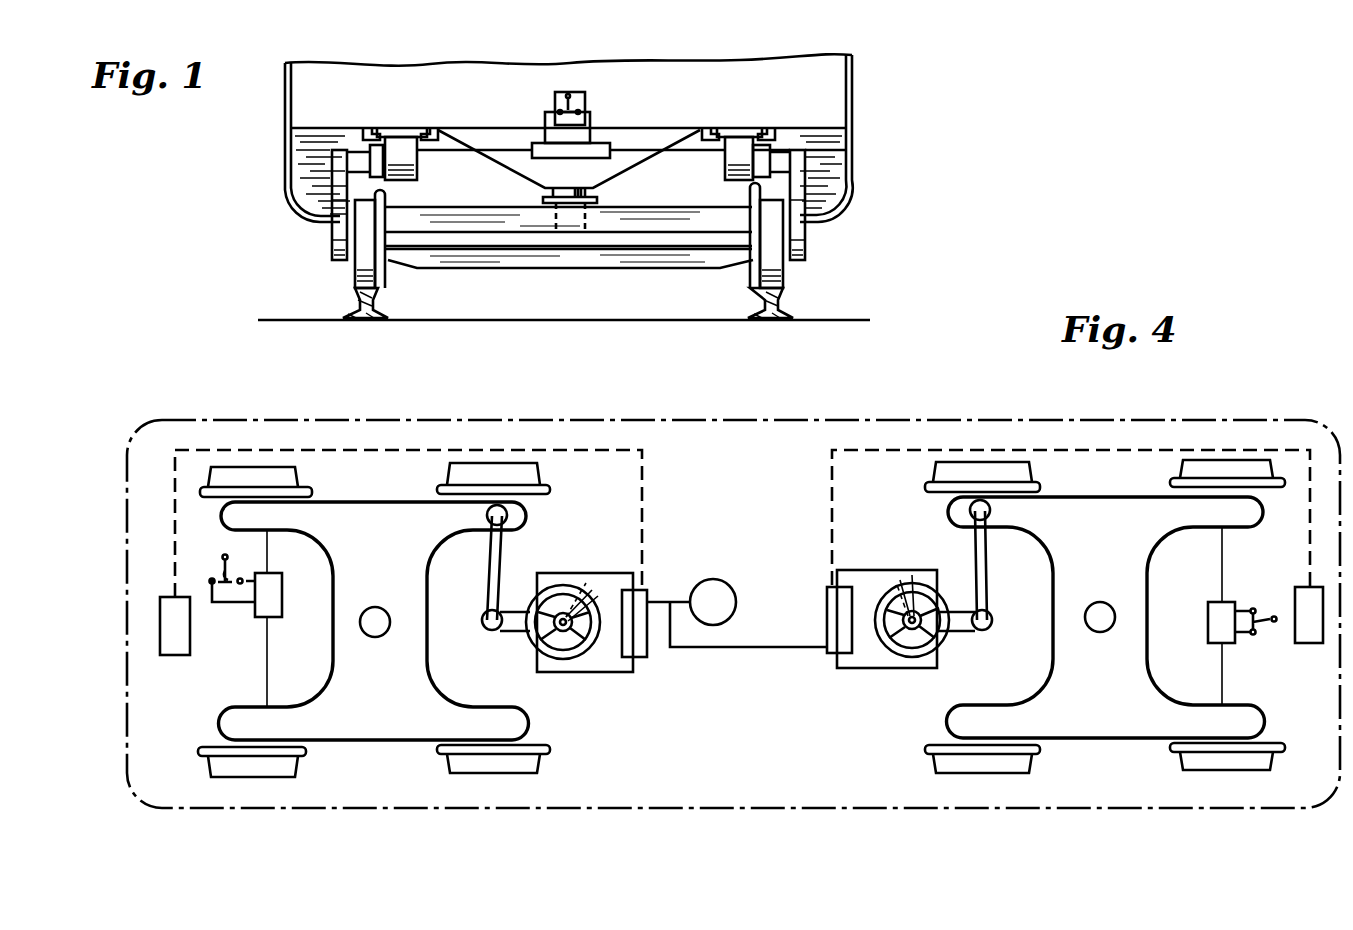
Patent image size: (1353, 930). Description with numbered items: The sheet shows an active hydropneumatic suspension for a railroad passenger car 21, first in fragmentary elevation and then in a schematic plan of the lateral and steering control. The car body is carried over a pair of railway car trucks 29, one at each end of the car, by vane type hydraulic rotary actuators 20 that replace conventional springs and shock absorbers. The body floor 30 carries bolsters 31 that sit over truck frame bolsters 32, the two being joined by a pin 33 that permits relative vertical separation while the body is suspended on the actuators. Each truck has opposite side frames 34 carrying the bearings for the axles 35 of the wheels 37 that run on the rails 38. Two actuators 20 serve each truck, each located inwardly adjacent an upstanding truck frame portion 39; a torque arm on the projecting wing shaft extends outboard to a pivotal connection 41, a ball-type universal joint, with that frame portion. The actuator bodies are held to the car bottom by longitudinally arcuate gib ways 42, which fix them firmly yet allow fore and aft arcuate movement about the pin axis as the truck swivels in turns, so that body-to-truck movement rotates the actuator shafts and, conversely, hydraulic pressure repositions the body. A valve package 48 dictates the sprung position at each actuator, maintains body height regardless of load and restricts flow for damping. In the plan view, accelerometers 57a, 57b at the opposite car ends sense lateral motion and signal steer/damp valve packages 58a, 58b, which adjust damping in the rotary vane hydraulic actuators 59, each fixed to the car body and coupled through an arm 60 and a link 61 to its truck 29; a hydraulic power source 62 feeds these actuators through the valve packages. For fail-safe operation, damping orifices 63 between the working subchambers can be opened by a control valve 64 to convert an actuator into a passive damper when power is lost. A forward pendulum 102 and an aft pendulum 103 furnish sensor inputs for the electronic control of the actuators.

In FIG. 1, the railroad passenger car 21 is at (275, 109).
In FIG. 4, the railroad passenger car 21 is at (462, 808).
In FIG. 1, the vane type hydraulic rotary actuator 20 is at (418, 163).
In FIG. 4, the railway car truck 29 is at (340, 658).
In FIG. 1, the floor 30 is at (315, 130).
In FIG. 1, the bolster 31 is at (602, 135).
In FIG. 1, the truck frame bolster 32 is at (510, 217).
In FIG. 1, the pin 33 is at (562, 193).
In FIG. 1, the side frame 34 is at (340, 217).
In FIG. 1, the axle 35 is at (637, 243).
In FIG. 1, the wheel 37 is at (386, 280).
In FIG. 4, the wheel 37 is at (450, 478).
In FIG. 1, the rail 38 is at (352, 297).
In FIG. 1, the upstanding truck frame portion 39 is at (800, 162).
In FIG. 1, the pivotal connection 41 is at (345, 172).
In FIG. 1, the gib way 42 is at (368, 128).
In FIG. 1, the valve package 48 is at (590, 160).
In FIG. 4, the valve package 48 is at (283, 594).
In FIG. 4, the accelerometer 57a is at (180, 630).
In FIG. 4, the accelerometer 57b is at (1298, 620).
In FIG. 4, the steer/damp valve package 58a is at (648, 650).
In FIG. 4, the steer/damp valve package 58b is at (827, 606).
In FIG. 4, the hydraulic actuator 59 is at (560, 588).
In FIG. 4, the arm 60 is at (516, 632).
In FIG. 4, the link 61 is at (488, 574).
In FIG. 4, the hydraulic power source 62 is at (730, 588).
In FIG. 4, the damping orifice 63 is at (598, 596).
In FIG. 4, the control valve 64 is at (562, 632).
In FIG. 1, the forward pendulum 102 is at (553, 100).
In FIG. 4, the forward pendulum 102 is at (223, 558).
In FIG. 4, the aft pendulum 103 is at (1272, 600).